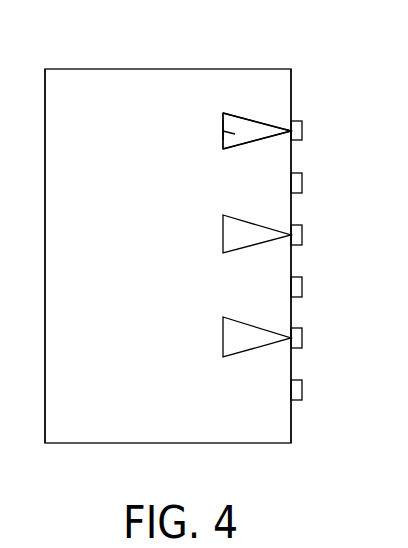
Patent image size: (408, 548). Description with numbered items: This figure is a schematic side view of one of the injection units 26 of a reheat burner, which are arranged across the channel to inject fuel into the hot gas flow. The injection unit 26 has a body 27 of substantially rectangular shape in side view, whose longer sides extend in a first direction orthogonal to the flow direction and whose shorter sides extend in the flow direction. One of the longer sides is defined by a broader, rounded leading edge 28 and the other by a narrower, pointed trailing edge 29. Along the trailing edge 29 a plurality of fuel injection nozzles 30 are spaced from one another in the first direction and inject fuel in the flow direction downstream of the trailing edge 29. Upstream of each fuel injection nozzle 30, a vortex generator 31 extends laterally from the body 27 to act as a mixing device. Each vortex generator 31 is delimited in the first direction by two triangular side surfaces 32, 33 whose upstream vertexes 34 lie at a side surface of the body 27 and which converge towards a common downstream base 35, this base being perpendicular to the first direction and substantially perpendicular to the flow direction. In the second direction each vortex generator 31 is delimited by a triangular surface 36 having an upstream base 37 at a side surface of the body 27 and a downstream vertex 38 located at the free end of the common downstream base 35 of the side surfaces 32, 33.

The injection unit 26 is at (70, 446).
The body 27 is at (65, 152).
The leading edge 28 is at (44, 250).
The trailing edge 29 is at (292, 358).
The fuel injection nozzle 30 is at (302, 137).
The vortex generator 31 is at (270, 122).
The triangular side surface 32 is at (262, 116).
The triangular side surface 33 is at (258, 142).
The upstream vertex 34 is at (223, 113).
The common downstream base 35 is at (291, 130).
The triangular surface 36 is at (229, 140).
The upstream base 37 is at (223, 128).
The downstream vertex 38 is at (335, 106).